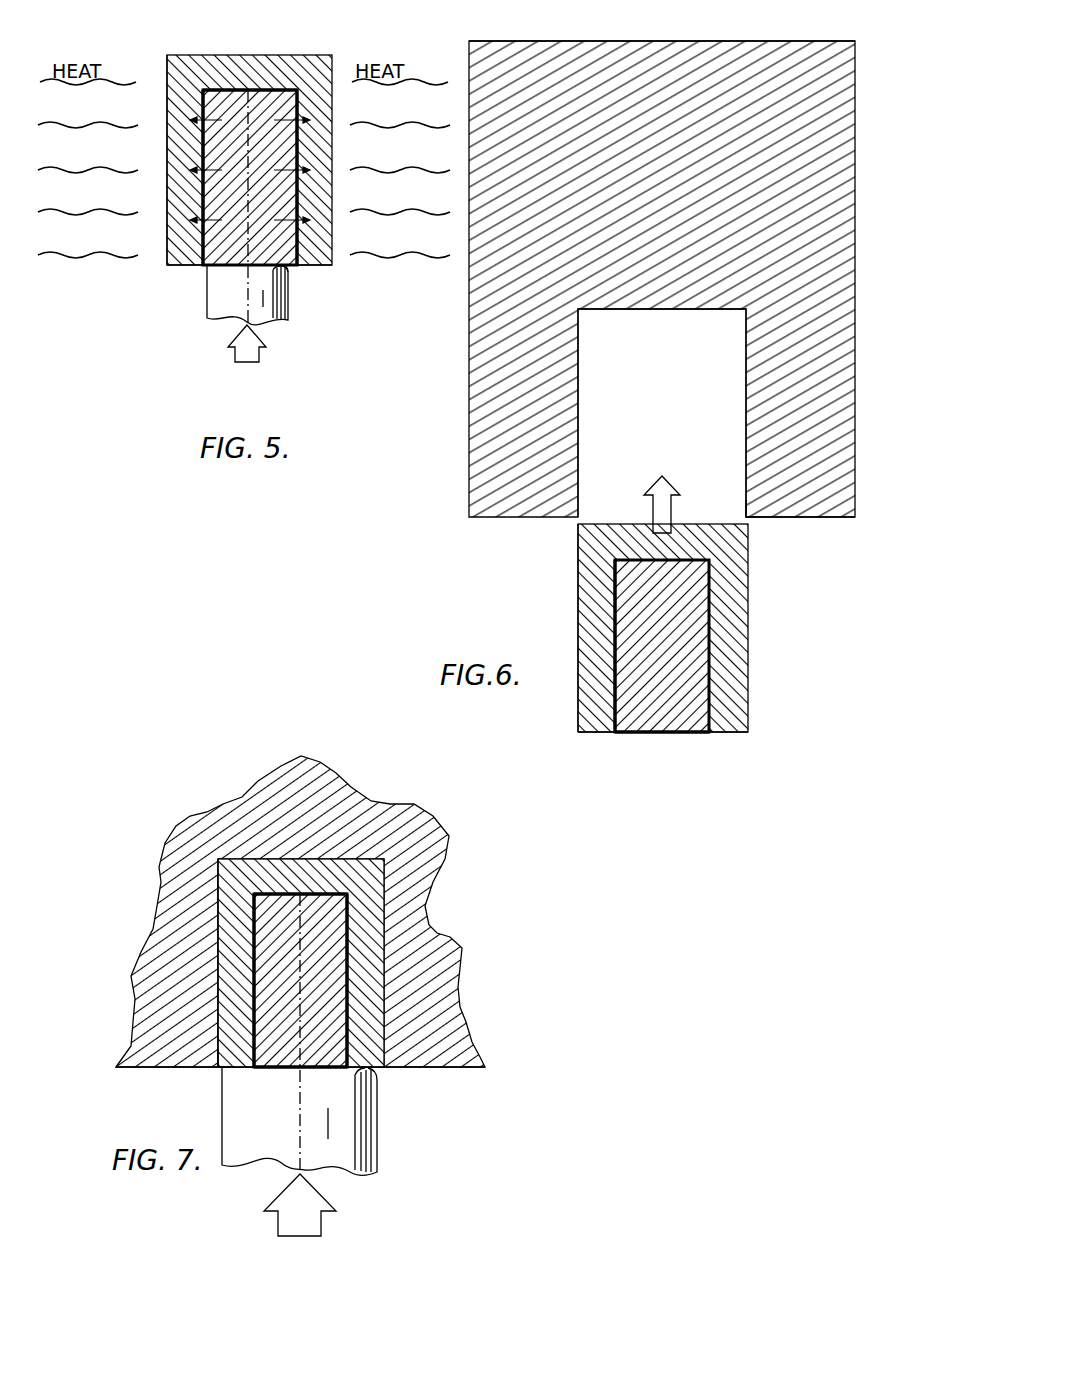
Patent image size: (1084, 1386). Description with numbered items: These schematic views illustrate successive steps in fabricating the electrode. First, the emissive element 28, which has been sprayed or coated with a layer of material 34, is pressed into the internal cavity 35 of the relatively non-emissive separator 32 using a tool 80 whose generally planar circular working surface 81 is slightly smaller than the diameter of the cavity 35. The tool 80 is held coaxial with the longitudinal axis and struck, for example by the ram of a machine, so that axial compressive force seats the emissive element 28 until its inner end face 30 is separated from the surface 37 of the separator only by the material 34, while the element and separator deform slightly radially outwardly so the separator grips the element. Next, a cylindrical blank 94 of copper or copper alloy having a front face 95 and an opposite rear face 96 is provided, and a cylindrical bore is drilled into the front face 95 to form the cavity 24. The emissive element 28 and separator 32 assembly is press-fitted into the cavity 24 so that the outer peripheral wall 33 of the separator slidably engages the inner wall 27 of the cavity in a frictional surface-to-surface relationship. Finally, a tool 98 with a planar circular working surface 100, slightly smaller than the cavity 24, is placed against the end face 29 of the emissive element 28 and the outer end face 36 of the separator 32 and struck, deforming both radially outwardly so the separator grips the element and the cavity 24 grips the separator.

In FIG. 6, the cavity 24 is at (738, 491).
In FIG. 7, the cavity 24 is at (219, 1071).
In FIG. 6, the inner wall 27 is at (583, 428).
In FIG. 7, the inner wall 27 is at (429, 929).
In FIG. 5, the emissive element 28 is at (218, 250).
In FIG. 6, the emissive element 28 is at (690, 685).
In FIG. 7, the emissive element 28 is at (277, 945).
In FIG. 6, the end face 29 is at (648, 733).
In FIG. 7, the end face 29 is at (273, 1069).
In FIG. 5, the inner end face 30 is at (265, 88).
In FIG. 7, the inner end face 30 is at (271, 885).
In FIG. 5, the separator 32 is at (175, 190).
In FIG. 6, the separator 32 is at (727, 597).
In FIG. 7, the separator 32 is at (235, 952).
In FIG. 5, the outer peripheral wall 33 is at (167, 120).
In FIG. 6, the outer peripheral wall 33 is at (576, 580).
In FIG. 7, the outer peripheral wall 33 is at (219, 1030).
In FIG. 5, the layer of material 34 is at (203, 147).
In FIG. 6, the layer of material 34 is at (613, 650).
In FIG. 7, the layer of material 34 is at (250, 995).
In FIG. 5, the internal cavity 35 is at (298, 237).
In FIG. 7, the internal cavity 35 is at (342, 892).
In FIG. 5, the outer end face 36 is at (172, 268).
In FIG. 6, the outer end face 36 is at (727, 733).
In FIG. 7, the outer end face 36 is at (359, 1088).
In FIG. 5, the surface 37 is at (290, 100).
In FIG. 5, the tool 80 is at (268, 308).
In FIG. 5, the working surface 81 is at (300, 263).
In FIG. 6, the cylindrical blank 94 is at (836, 439).
In FIG. 7, the cylindrical blank 94 is at (429, 832).
In FIG. 6, the front face 95 is at (812, 517).
In FIG. 7, the front face 95 is at (421, 1067).
In FIG. 6, the rear face 96 is at (722, 38).
In FIG. 7, the tool 98 is at (341, 1104).
In FIG. 7, the working surface 100 is at (347, 1026).